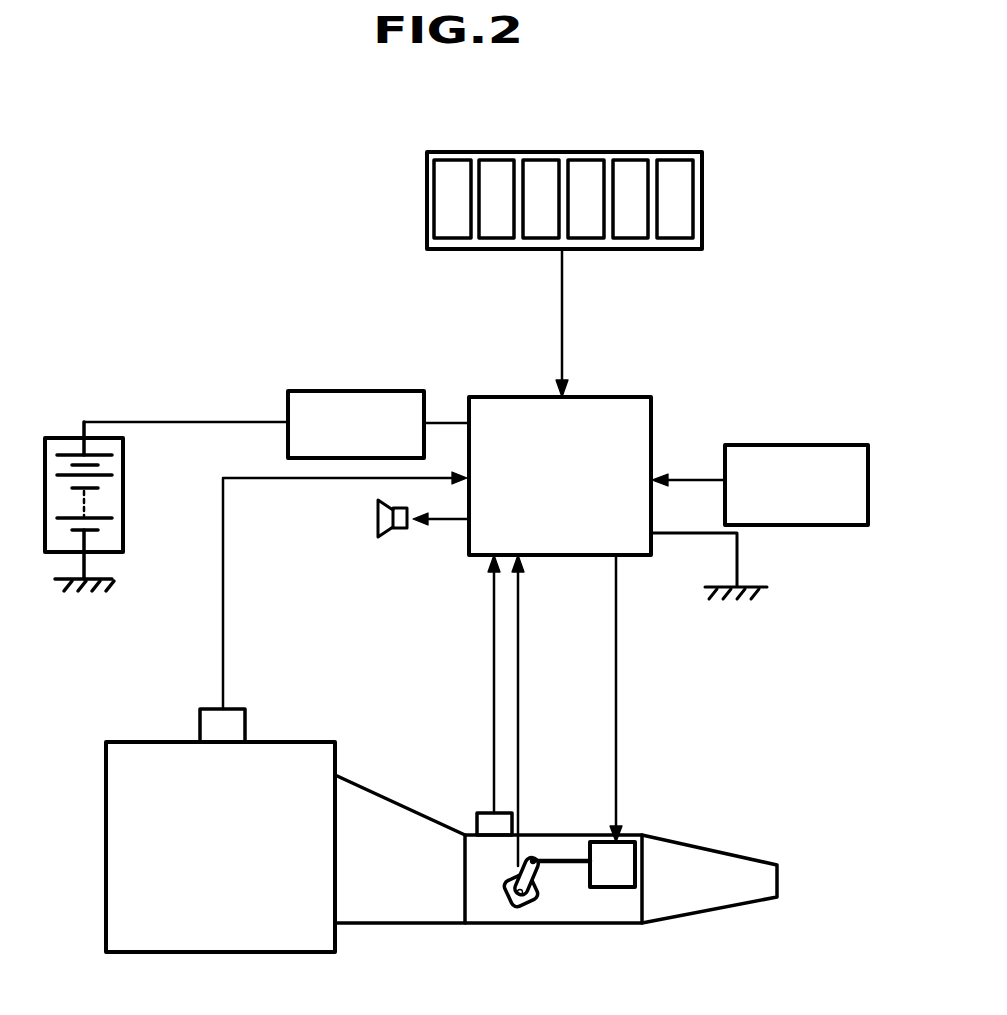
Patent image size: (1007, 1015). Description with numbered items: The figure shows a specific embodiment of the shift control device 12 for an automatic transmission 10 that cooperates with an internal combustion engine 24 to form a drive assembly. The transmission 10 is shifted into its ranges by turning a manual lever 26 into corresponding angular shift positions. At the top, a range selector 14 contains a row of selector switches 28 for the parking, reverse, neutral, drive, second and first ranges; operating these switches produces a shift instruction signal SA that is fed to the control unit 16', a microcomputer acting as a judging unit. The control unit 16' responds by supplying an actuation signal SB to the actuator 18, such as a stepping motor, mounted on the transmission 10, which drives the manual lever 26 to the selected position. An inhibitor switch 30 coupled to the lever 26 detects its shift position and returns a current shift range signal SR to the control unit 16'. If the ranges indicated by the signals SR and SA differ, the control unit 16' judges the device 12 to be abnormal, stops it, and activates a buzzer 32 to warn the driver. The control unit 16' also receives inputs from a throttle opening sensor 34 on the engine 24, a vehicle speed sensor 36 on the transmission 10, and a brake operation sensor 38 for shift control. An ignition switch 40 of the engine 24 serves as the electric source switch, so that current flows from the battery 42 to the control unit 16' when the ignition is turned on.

The automatic transmission 10 is at (523, 913).
The shift control device 12 is at (818, 284).
The range selector 14 is at (702, 217).
The control unit 16' is at (583, 450).
The actuator 18 is at (624, 888).
The internal combustion engine 24 is at (307, 953).
The manual lever 26 is at (545, 878).
The selector switches 28 is at (433, 144).
The inhibitor switch 30 is at (497, 900).
The buzzer 32 is at (384, 538).
The throttle opening sensor 34 is at (245, 710).
The vehicle speed sensor 36 is at (480, 813).
The brake operation sensor 38 is at (796, 445).
The ignition switch 40 is at (370, 391).
The battery 42 is at (123, 524).
The shift instruction signal SA is at (580, 323).
The current shift range signal SR is at (518, 696).
The actuation signal SB is at (616, 735).